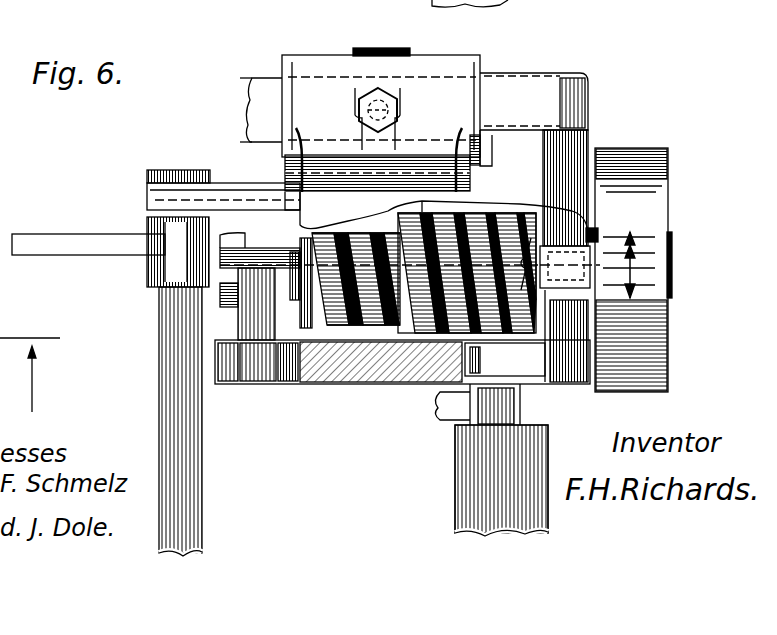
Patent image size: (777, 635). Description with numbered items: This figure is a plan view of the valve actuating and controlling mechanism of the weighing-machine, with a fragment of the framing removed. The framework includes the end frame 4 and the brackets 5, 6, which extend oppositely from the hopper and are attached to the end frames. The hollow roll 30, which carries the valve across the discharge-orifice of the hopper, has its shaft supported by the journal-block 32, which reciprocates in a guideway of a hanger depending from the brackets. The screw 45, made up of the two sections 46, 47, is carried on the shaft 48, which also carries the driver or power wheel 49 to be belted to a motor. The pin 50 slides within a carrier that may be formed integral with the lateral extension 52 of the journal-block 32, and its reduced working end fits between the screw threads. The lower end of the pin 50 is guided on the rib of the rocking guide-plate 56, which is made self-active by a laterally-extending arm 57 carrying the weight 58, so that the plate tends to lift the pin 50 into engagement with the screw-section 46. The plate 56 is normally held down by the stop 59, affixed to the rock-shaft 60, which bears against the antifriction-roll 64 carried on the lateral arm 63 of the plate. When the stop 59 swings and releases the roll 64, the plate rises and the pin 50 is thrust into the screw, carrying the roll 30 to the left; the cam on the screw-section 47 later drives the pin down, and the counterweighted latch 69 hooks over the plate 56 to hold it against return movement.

The end frame 4 is at (527, 82).
The bracket 5 is at (690, 328).
The bracket 6 is at (360, 106).
The hollow roll 30 is at (462, 470).
The journal-block 32 is at (526, 382).
The screw 45 is at (436, 181).
The screw-section 46 is at (421, 223).
The screw-section 47 is at (370, 312).
The shaft 48 is at (668, 272).
The driver or power wheel 49 is at (651, 334).
The pin 50 is at (560, 257).
The lateral extension 52 is at (514, 334).
The guide-plate 56 is at (278, 258).
The laterally-extending arm 57 is at (398, 136).
The weight 58 is at (388, 50).
The stop 59 is at (69, 242).
The rock-shaft 60 is at (176, 368).
The lateral arm 63 is at (224, 206).
The antifriction-roll 64 is at (168, 262).
The latch 69 is at (598, 236).